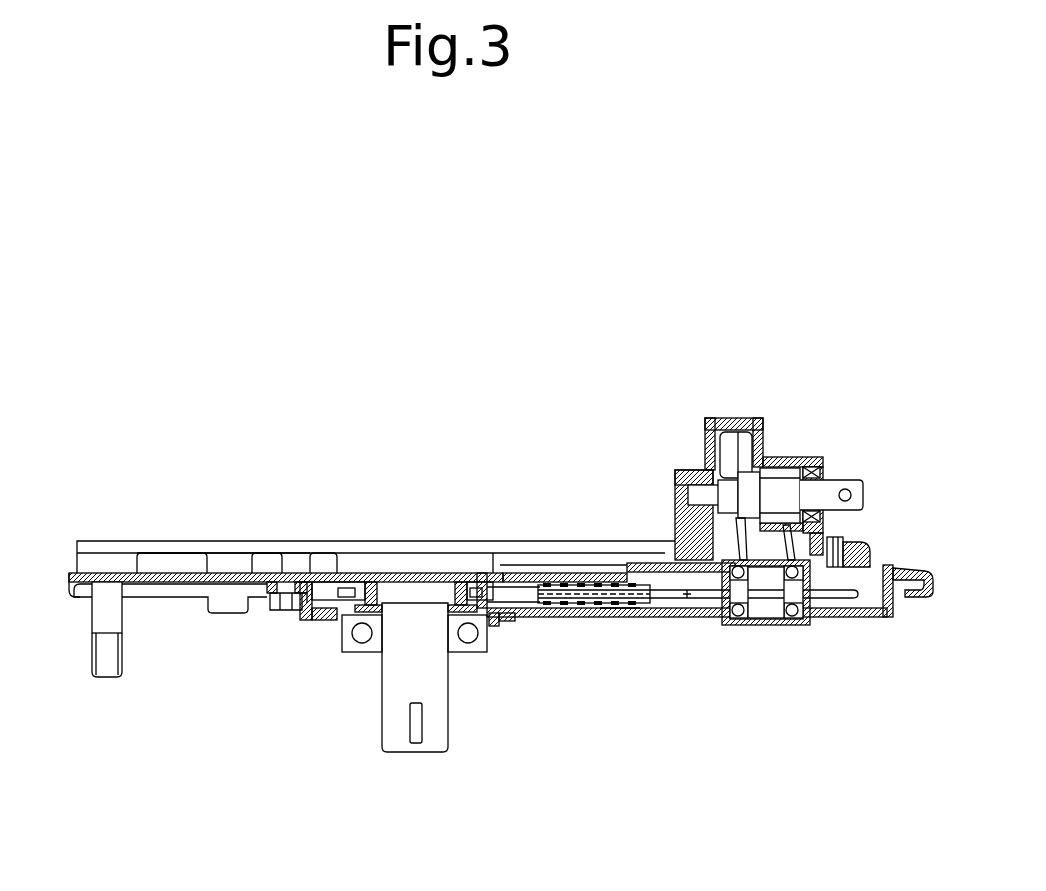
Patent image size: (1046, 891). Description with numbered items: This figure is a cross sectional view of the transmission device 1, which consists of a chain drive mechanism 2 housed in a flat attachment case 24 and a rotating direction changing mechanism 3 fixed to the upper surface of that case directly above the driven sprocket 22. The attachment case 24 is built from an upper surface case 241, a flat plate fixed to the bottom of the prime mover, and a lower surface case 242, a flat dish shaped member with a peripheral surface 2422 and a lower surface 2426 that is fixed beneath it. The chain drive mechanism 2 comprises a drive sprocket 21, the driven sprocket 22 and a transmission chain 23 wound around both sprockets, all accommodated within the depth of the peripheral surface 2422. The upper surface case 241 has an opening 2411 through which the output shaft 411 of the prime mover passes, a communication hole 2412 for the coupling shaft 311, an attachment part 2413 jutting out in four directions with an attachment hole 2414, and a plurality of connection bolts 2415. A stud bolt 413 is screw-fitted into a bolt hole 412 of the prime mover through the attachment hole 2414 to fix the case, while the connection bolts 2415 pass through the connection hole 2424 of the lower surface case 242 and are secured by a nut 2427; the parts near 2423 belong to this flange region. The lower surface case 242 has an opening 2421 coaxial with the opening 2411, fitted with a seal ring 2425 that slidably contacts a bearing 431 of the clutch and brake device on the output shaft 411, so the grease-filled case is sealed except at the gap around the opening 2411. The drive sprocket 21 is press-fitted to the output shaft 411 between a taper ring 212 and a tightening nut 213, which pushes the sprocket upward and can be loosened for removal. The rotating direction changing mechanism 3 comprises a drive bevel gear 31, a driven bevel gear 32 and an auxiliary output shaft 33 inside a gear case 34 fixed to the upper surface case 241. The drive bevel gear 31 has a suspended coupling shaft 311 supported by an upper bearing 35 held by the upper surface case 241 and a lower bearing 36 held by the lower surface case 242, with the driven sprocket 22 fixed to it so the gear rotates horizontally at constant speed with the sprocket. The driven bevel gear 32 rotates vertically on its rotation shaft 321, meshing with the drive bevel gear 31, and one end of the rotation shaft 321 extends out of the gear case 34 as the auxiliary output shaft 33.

The transmission device 1 is at (678, 301).
The chain drive mechanism 2 is at (541, 573).
The rotating direction changing mechanism 3 is at (686, 469).
The drive sprocket 21 is at (478, 578).
The driven sprocket 22 is at (697, 600).
The transmission chain 23 is at (585, 617).
The attachment case 24 is at (517, 573).
The drive bevel gear 31 is at (793, 540).
The driven bevel gear 32 is at (740, 467).
The auxiliary output shaft 33 is at (830, 488).
The gear case 34 is at (703, 470).
The upper bearing 35 is at (857, 543).
The lower bearing 36 is at (793, 622).
The taper ring 212 is at (465, 580).
The tightening nut 213 is at (468, 636).
The upper surface case 241 is at (310, 576).
The lower surface case 242 is at (648, 617).
The coupling shaft 311 is at (767, 615).
The rotation shaft 321 is at (778, 490).
The output shaft 411 is at (403, 748).
The bolt hole 412 is at (103, 565).
The stud bolt 413 is at (107, 667).
The bearing 431 is at (362, 636).
The opening 2411 is at (352, 580).
The communication hole 2412 is at (868, 565).
The attachment part 2413 is at (168, 576).
The attachment hole 2414 is at (122, 576).
The connection bolt 2415 is at (280, 576).
The opening 2421 is at (510, 623).
The peripheral surface 2422 is at (297, 607).
The washer 2423 is at (270, 603).
The connection hole 2424 is at (262, 587).
The seal ring 2425 is at (493, 623).
The lower surface 2426 is at (615, 617).
The nut 2427 is at (286, 610).